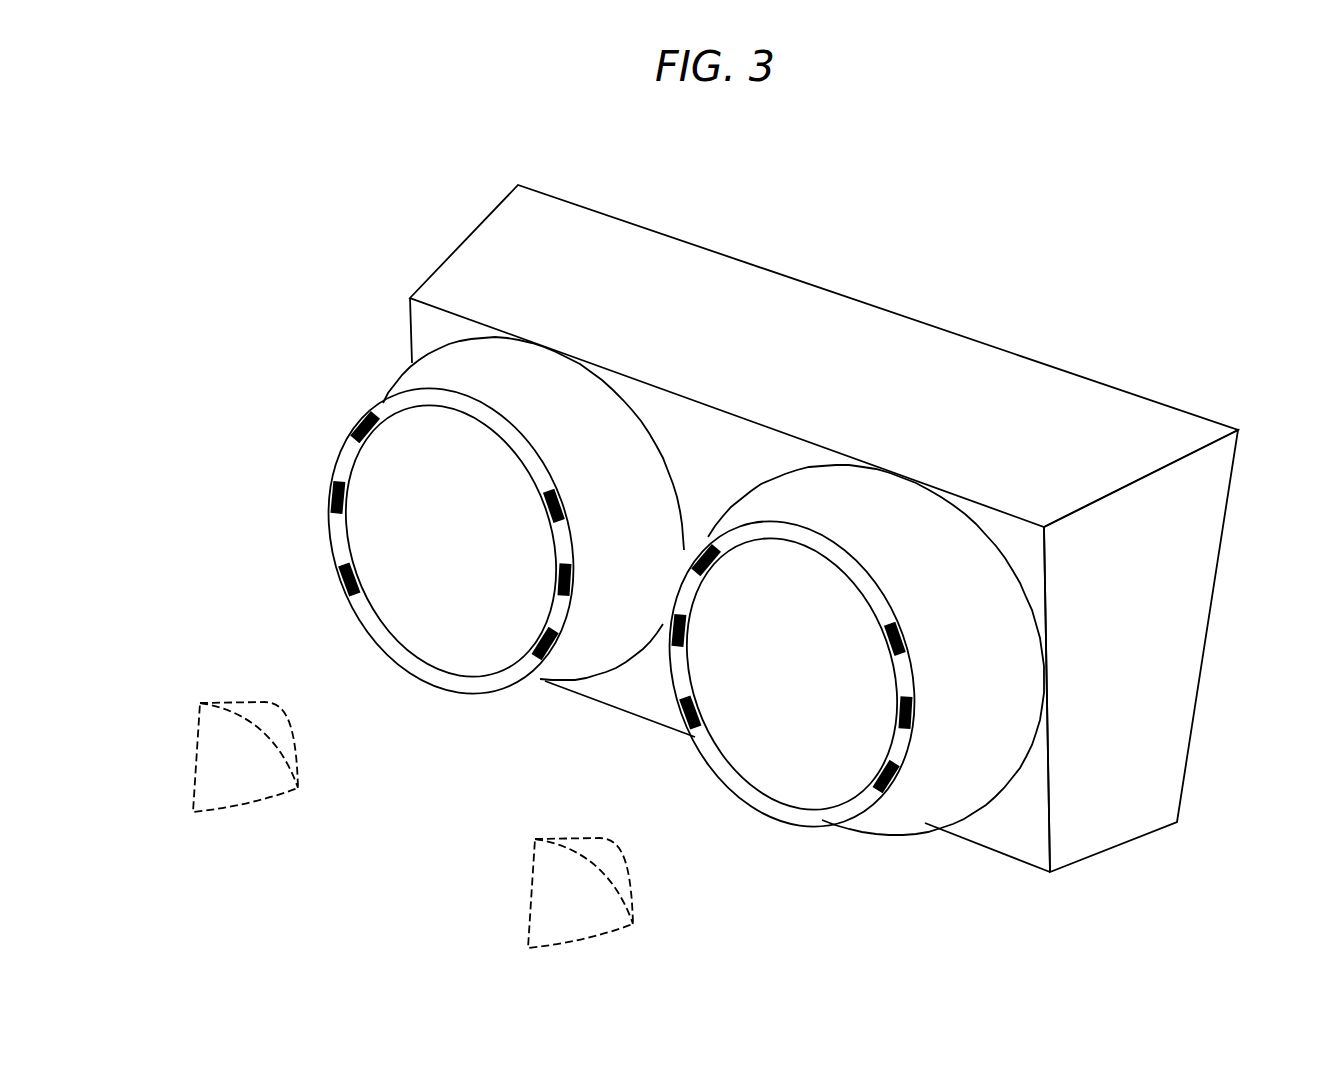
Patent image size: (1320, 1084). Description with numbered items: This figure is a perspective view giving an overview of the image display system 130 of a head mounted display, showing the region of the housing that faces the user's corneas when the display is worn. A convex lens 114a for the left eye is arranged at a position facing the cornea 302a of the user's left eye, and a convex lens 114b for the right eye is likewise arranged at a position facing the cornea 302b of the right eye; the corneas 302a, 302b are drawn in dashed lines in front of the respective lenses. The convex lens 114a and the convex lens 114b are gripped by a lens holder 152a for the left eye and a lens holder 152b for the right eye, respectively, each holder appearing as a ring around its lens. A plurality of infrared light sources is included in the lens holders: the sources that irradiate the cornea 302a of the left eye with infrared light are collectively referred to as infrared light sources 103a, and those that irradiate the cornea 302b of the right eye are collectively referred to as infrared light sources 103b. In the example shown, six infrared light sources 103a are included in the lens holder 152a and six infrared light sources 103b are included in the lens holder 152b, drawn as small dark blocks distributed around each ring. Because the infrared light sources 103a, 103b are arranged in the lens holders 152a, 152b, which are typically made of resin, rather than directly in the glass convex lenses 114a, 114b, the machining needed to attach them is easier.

The image display system 130 is at (862, 313).
The lens holder for the left eye 152a is at (382, 407).
The lens holder for the right eye 152b is at (820, 823).
The convex lens for the left eye 114a is at (447, 652).
The convex lens for the right eye 114b is at (765, 775).
The infrared light sources 103a is at (365, 441).
The infrared light sources 103b is at (791, 668).
The cornea of the left eye 302a is at (228, 698).
The cornea of the right eye 302b is at (602, 838).